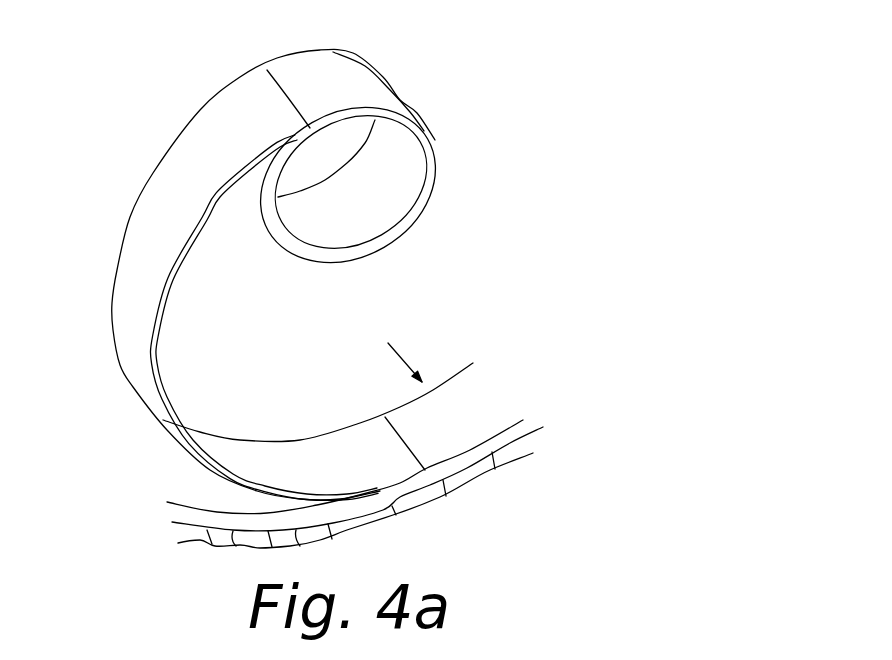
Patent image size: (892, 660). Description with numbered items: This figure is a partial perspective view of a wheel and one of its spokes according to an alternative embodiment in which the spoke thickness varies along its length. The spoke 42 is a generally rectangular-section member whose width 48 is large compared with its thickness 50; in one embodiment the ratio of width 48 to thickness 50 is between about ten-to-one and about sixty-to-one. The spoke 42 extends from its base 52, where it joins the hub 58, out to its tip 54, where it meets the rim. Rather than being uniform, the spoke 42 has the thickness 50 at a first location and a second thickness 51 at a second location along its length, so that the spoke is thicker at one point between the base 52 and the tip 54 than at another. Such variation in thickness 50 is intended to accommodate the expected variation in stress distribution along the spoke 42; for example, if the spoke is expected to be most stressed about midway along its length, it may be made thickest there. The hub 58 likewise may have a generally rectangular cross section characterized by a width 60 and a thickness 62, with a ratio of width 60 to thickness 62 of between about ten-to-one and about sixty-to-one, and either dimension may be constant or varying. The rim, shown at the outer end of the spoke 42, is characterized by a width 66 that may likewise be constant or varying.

The spoke 42 is at (112, 317).
The width 48 is at (199, 232).
The thickness 50 is at (107, 383).
The second thickness 51 is at (220, 517).
The base 52 is at (280, 97).
The tip 54 is at (405, 438).
The hub 58 is at (432, 143).
The width 60 is at (357, 168).
The thickness 62 is at (333, 198).
The width 66 is at (478, 449).